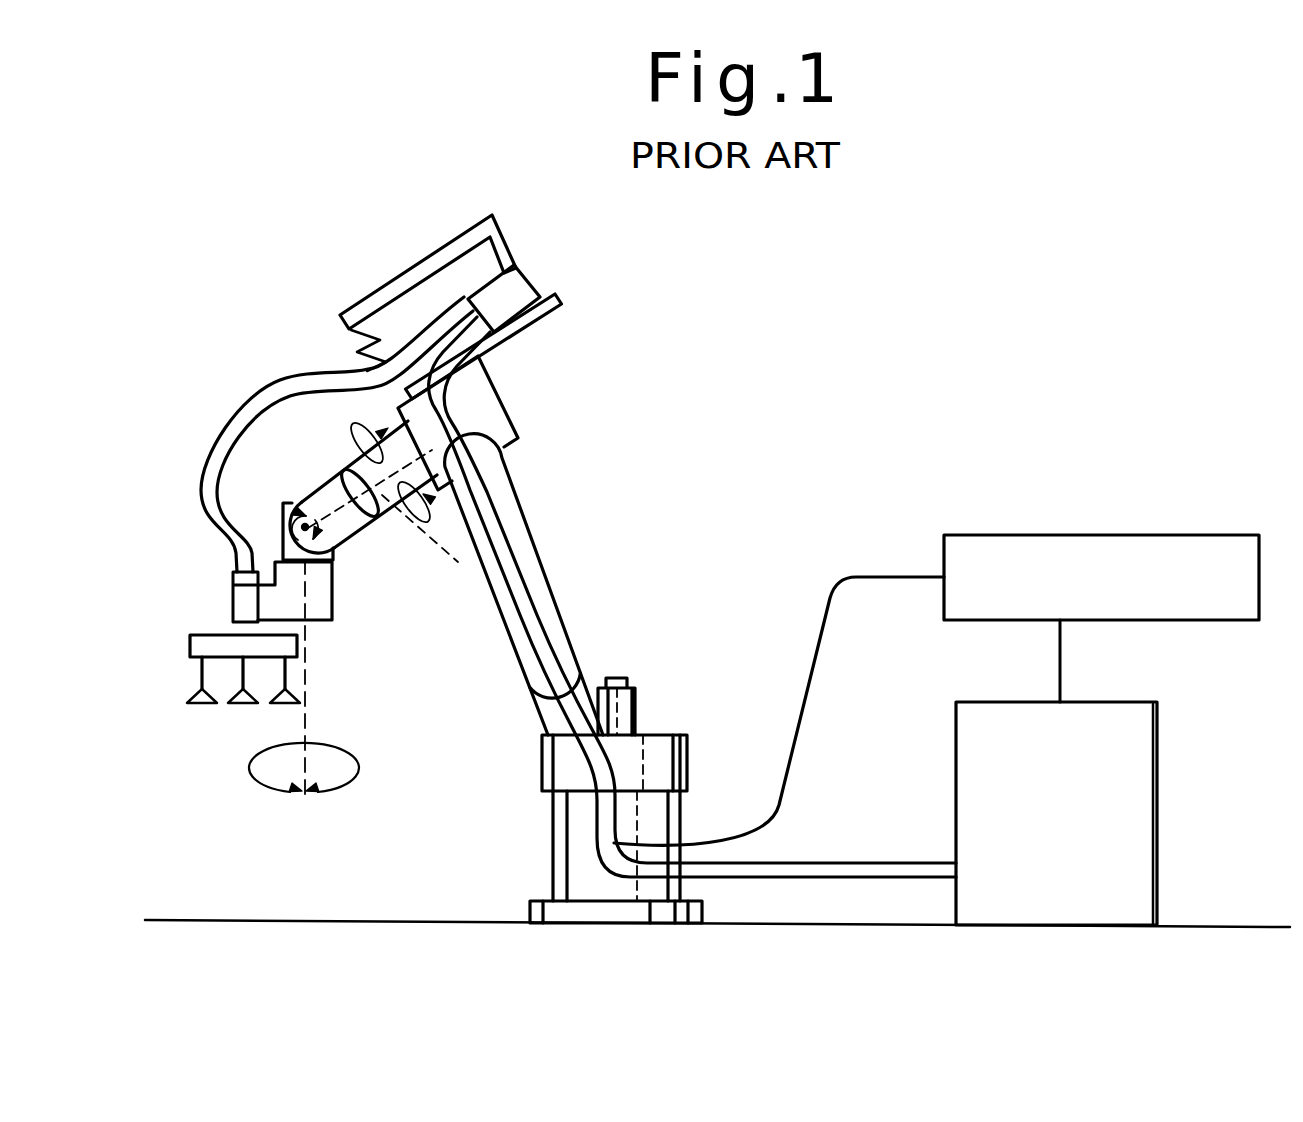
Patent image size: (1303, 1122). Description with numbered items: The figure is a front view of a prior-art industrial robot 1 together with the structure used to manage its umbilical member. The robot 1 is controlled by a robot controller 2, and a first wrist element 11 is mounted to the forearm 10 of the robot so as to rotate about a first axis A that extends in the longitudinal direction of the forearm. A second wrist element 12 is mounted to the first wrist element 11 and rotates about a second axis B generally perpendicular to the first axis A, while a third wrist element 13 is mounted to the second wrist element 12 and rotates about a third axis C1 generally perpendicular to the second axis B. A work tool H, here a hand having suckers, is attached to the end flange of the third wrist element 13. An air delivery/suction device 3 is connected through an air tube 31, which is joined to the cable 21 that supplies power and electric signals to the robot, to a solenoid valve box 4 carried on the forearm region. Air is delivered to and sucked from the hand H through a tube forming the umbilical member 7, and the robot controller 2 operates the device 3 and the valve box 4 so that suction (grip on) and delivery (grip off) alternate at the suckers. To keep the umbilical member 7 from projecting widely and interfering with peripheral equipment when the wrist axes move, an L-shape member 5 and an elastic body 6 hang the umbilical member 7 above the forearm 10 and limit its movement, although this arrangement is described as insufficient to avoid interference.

The robot 1 is at (568, 592).
The robot controller 2 is at (1163, 806).
The air delivery/suction device 3 is at (1130, 530).
The solenoid valve box 4 is at (540, 278).
The L-shape member 5 is at (400, 278).
The elastic body 6 is at (327, 349).
The tube (umbilical member) 7 is at (232, 415).
The forearm 10 is at (506, 399).
The first wrist element 11 is at (372, 536).
The second wrist element 12 is at (333, 575).
The third wrist element 13 is at (335, 585).
The cable 21 is at (877, 861).
The air tube 31 is at (820, 652).
The first axis A is at (426, 543).
The second axis B is at (305, 527).
The third axis C1 is at (304, 700).
The work tool (hand) H is at (203, 712).